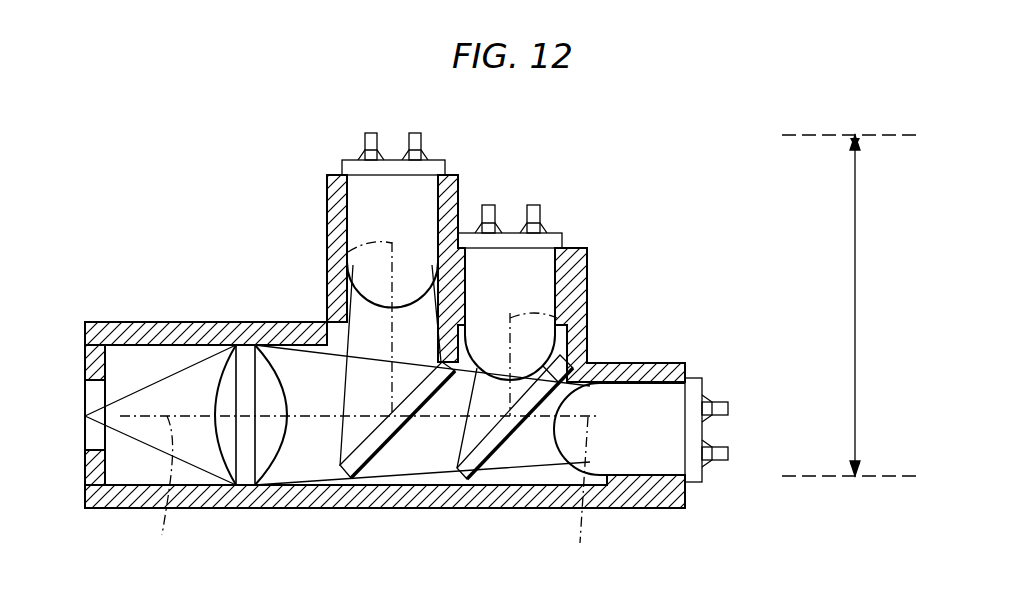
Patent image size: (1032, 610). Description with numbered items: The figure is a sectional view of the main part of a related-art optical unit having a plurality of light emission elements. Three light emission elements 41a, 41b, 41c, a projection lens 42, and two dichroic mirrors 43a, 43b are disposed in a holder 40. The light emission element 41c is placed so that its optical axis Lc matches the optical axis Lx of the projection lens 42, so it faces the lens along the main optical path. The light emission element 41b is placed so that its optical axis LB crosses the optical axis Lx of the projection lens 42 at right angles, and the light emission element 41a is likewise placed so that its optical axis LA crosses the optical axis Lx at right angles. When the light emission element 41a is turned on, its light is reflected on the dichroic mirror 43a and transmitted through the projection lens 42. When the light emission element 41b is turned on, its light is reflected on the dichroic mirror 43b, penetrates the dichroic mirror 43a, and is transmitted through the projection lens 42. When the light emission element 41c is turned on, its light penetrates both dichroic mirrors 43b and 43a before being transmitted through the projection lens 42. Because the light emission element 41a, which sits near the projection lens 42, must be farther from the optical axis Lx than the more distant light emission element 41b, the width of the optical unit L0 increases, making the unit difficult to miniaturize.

The holder 40 is at (171, 322).
The light emission element 41a is at (430, 199).
The light emission element 41b is at (543, 273).
The light emission element 41c is at (664, 394).
The projection lens 42 is at (239, 470).
The dichroic mirror 43a is at (378, 455).
The dichroic mirror 43b is at (503, 457).
The optical axis LA is at (348, 252).
The optical axis LB is at (585, 328).
The optical axis Lc is at (588, 493).
The optical axis Lx is at (168, 492).
The width of the optical unit L0 is at (851, 305).